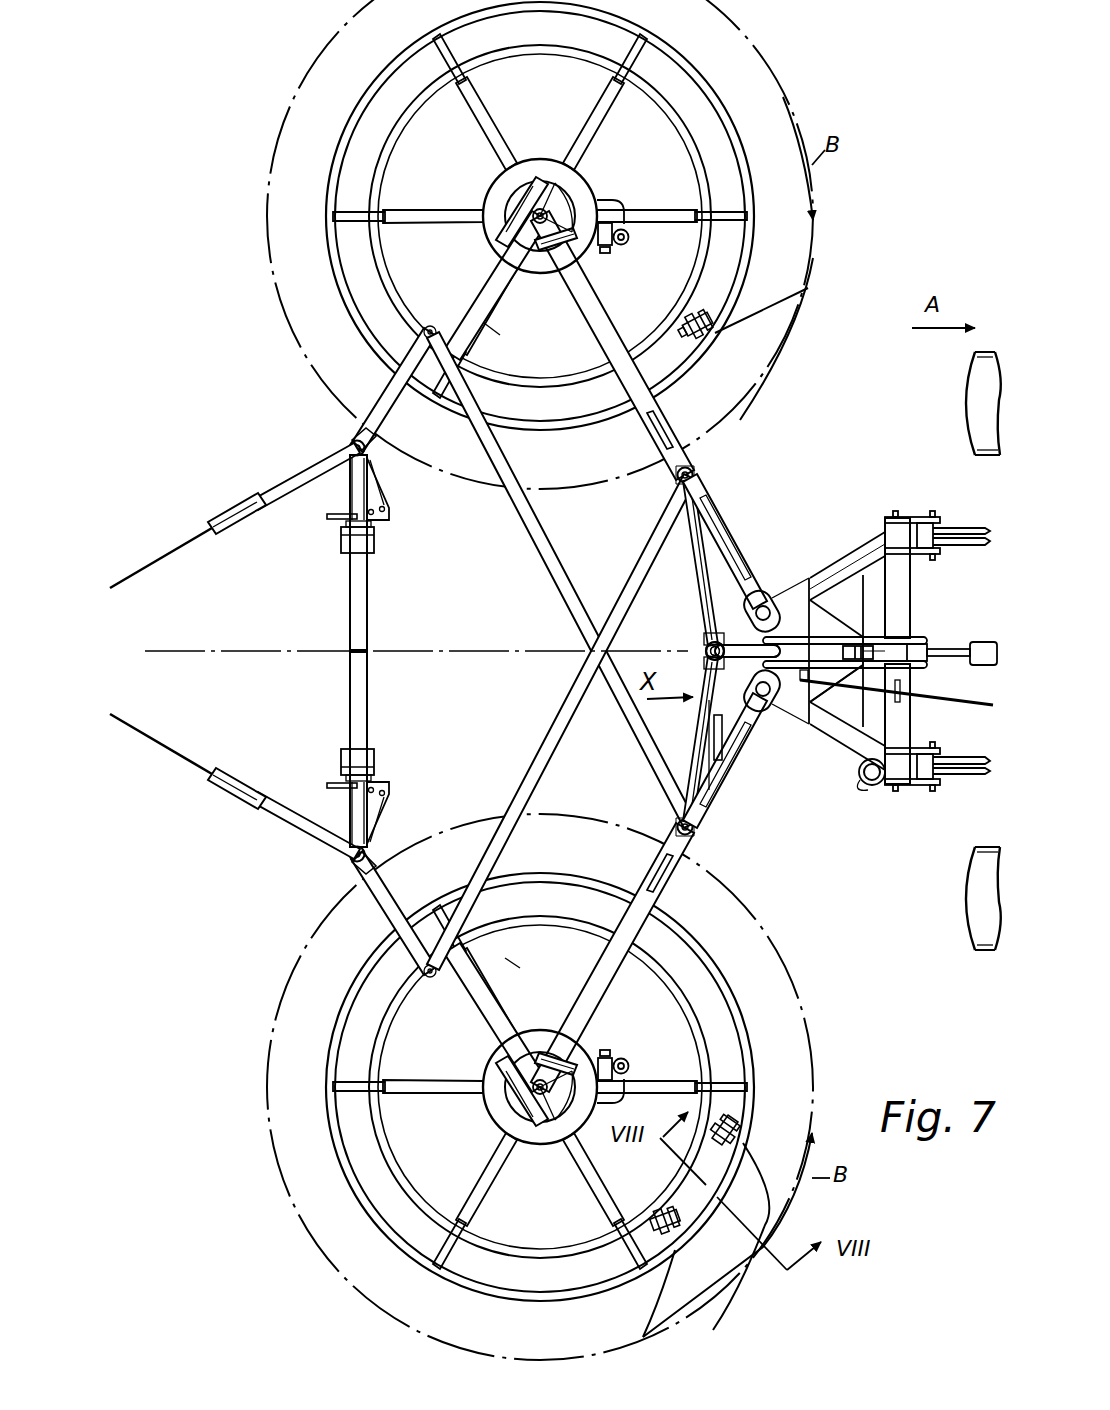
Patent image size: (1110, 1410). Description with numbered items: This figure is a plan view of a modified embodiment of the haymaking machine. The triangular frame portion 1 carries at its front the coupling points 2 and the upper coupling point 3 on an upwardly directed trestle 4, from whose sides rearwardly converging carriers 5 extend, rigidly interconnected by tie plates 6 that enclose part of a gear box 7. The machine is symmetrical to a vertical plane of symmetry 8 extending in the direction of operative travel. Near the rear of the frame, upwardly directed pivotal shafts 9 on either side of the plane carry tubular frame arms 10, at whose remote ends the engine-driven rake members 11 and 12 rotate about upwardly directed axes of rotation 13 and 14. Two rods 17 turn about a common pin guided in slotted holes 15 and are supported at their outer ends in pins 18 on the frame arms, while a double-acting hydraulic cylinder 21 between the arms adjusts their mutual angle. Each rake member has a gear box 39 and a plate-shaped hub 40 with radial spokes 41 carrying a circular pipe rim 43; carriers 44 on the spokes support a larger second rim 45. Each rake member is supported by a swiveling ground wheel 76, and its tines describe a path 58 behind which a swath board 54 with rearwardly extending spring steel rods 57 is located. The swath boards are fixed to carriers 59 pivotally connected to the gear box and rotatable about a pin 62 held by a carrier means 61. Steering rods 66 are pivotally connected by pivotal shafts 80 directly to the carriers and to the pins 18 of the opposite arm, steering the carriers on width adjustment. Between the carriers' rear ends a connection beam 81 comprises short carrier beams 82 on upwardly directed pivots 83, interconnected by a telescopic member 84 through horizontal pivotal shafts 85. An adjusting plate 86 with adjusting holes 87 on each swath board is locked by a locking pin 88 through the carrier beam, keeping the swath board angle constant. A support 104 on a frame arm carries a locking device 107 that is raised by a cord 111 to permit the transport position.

The frame portion 1 is at (862, 545).
The coupling points 2 is at (930, 512).
The upper coupling point 3 is at (925, 636).
The trestle 4 is at (900, 605).
The carriers 5 is at (840, 560).
The tie plates 6 is at (812, 585).
The gear box 7 is at (840, 598).
The plane of symmetry 8 is at (455, 655).
The pivotal shafts 9 is at (770, 590).
The frame arms 10 is at (575, 318).
The rake member 11 is at (785, 82).
The rake member 12 is at (818, 995).
The axis of rotation 13 is at (983, 651).
The axis of rotation 14 is at (560, 205).
The slotted holes 15 is at (705, 642).
The rods 17 is at (705, 500).
The pins 18 is at (700, 468).
The hydraulic cylinder 21 is at (700, 570).
The gear box 39 is at (560, 182).
The hub 40 is at (598, 200).
The spokes 41 is at (480, 318).
The rim 43 is at (556, 55).
The carrier 44 is at (386, 214).
The second rim 45 is at (535, 420).
The swath board 54 is at (235, 510).
The spring steel rods 57 is at (150, 562).
The tine path 58 is at (268, 232).
The carriers 59 is at (480, 280).
The carrier means 61 is at (502, 210).
The pin 62 is at (552, 175).
The steering rods 66 is at (585, 660).
The ground wheel 76 is at (622, 247).
The pivotal shafts 80 is at (428, 328).
The connection beam 81 is at (345, 588).
The carrier beam 82 is at (350, 490).
The pivot 83 is at (350, 447).
The member 84 is at (368, 605).
The pivotal shafts 85 is at (378, 550).
The adjusting plate 86 is at (385, 488).
The adjusting holes 87 is at (390, 510).
The locking pin 88 is at (325, 522).
The support 104 is at (675, 415).
The locking device 107 is at (712, 742).
The cord 111 is at (945, 705).